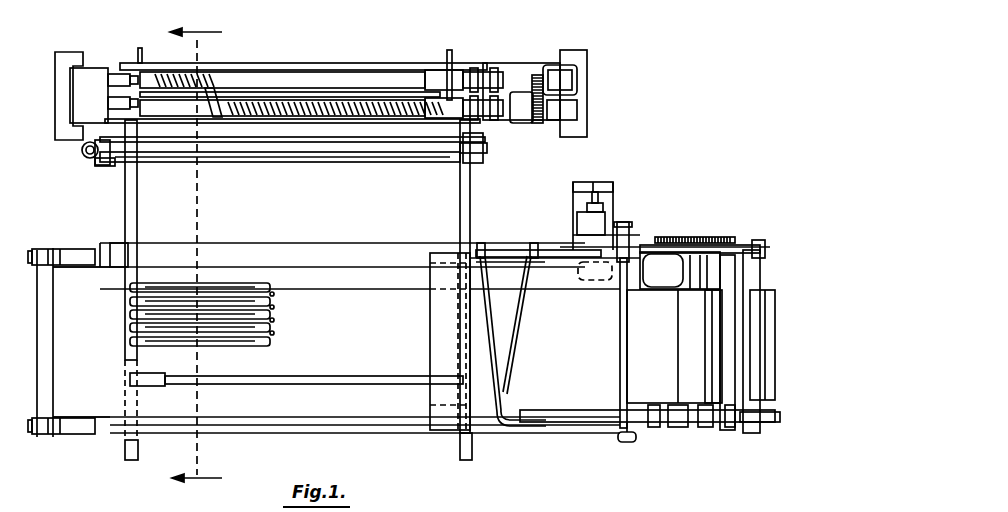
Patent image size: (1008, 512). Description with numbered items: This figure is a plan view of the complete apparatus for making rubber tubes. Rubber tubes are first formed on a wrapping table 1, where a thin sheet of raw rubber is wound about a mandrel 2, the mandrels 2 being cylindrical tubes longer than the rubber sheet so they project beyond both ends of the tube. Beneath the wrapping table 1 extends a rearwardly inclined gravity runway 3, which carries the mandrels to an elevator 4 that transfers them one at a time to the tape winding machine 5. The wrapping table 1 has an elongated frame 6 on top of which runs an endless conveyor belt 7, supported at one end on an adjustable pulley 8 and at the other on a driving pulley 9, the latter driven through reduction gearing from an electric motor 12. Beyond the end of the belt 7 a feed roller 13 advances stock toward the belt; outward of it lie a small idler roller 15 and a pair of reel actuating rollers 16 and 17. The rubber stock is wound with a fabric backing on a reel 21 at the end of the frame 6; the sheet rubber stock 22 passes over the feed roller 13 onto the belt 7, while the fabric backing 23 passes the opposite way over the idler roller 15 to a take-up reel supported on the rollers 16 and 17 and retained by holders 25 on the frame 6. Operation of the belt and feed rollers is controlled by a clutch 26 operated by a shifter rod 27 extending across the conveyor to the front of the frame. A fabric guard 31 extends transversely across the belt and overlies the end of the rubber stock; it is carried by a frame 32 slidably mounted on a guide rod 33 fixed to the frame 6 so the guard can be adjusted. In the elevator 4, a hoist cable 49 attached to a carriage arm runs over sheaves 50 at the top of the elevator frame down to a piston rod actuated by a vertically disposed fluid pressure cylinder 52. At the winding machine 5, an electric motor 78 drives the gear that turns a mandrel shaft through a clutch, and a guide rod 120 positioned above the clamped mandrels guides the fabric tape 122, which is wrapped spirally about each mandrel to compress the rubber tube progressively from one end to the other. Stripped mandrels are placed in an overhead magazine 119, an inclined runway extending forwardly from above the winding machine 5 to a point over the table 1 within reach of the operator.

The wrapping table 1 is at (288, 244).
The mandrel 2 is at (160, 398).
The gravity runway 3 is at (458, 214).
The elevator 4 is at (224, 143).
The tape winding machine 5 is at (520, 64).
The elongated frame 6 is at (34, 320).
The endless conveyor belt 7 is at (73, 366).
The adjustable pulley 8 is at (56, 250).
The driving pulley 9 is at (618, 426).
The electric motor 12 is at (641, 292).
The feed roller 13 is at (654, 427).
The idler roller 15 is at (676, 428).
The reel actuating roller 16 is at (703, 426).
The reel actuating roller 17 is at (730, 428).
The reel 21 is at (776, 298).
The sheet rubber stock 22 is at (318, 316).
The fabric backing 23 is at (690, 352).
The holder 25 is at (734, 246).
The clutch 26 is at (632, 227).
The shifter rod 27 is at (618, 332).
The fabric guard 31 is at (432, 338).
The frame 32 is at (504, 354).
The guide rod 33 is at (518, 247).
The hoist cable 49 is at (313, 152).
The sheave 50 is at (100, 166).
The fluid pressure cylinder 52 is at (78, 152).
The electric motor 78 is at (556, 58).
The overhead magazine 119 is at (134, 231).
The guide rod 120 is at (442, 64).
The fabric tape 122 is at (218, 86).